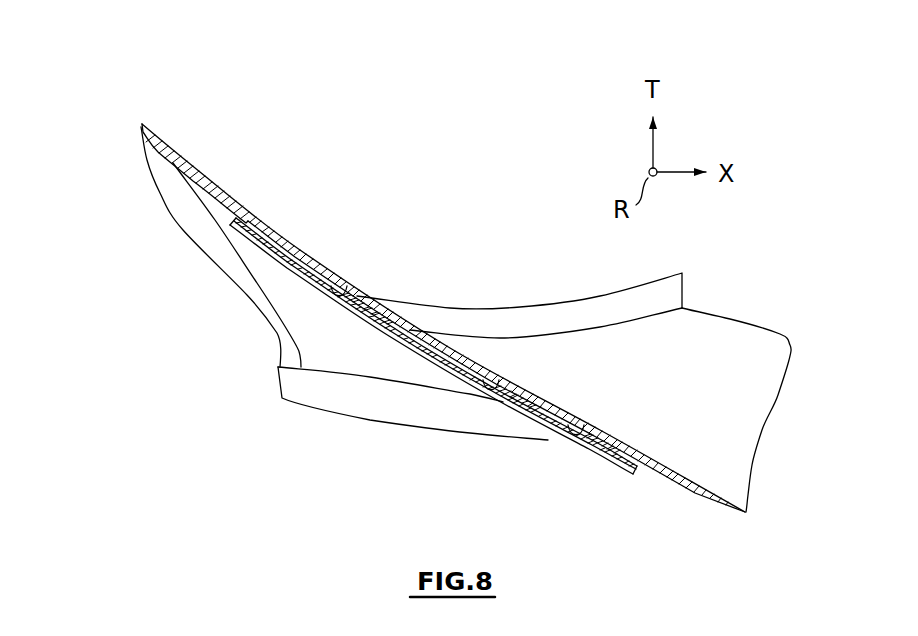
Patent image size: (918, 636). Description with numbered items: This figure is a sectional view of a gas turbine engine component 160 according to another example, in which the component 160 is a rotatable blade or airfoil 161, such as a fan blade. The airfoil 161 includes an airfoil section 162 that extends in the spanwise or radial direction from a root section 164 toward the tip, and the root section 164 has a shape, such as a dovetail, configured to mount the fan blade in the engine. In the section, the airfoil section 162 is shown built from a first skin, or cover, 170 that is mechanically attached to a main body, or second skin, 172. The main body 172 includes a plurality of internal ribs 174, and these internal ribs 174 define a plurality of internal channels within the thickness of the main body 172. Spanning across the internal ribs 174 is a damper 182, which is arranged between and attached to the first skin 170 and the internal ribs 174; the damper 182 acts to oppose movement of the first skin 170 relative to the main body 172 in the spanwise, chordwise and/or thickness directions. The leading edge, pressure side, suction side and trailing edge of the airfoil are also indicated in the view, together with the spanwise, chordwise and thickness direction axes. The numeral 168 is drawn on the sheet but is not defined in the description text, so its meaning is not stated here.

The component 160 is at (178, 102).
The airfoil 161 is at (129, 142).
The airfoil section 162 is at (158, 210).
The root section 164 is at (268, 392).
The airfoil wall 168 is at (241, 208).
The first skin 170 is at (217, 225).
The main body 172 is at (345, 288).
The internal ribs 174 is at (363, 325).
The damper 182 is at (405, 332).